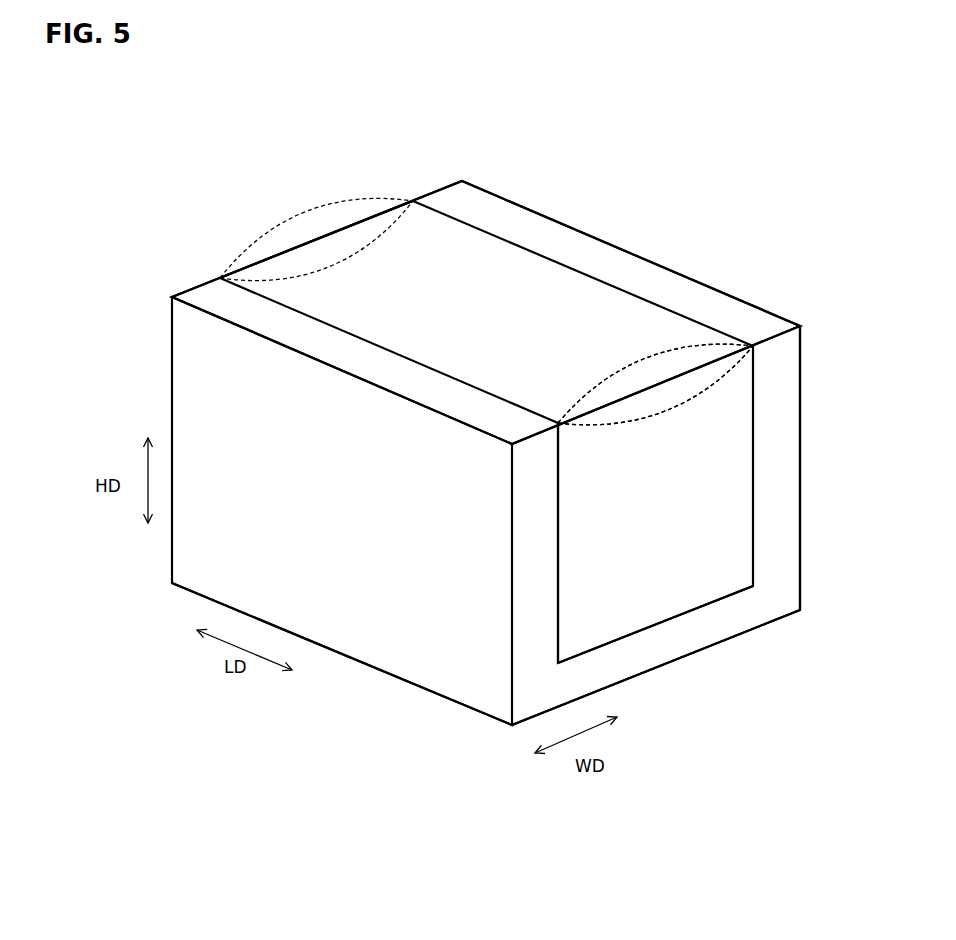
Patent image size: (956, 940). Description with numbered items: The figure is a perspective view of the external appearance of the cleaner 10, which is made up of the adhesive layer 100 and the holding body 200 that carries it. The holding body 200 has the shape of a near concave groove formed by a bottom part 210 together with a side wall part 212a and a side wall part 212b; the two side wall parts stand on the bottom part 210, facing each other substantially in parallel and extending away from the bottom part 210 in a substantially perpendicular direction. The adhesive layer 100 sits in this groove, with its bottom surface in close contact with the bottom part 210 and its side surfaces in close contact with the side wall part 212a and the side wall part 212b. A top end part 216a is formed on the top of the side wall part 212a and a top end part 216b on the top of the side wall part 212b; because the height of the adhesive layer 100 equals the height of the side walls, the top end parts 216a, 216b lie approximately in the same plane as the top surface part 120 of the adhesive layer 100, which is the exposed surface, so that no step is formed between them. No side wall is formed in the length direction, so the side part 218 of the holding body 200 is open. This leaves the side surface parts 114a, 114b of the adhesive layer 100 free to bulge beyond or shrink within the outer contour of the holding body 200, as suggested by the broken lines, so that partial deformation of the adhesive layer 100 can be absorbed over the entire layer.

The cleaner 10 is at (517, 167).
The adhesive layer 100 is at (485, 308).
The side surface part 114a is at (607, 582).
The side surface part 114b is at (252, 220).
The top surface part 120 is at (663, 337).
The holding body 200 is at (190, 390).
The bottom part 210 is at (627, 665).
The side wall part 212a is at (358, 597).
The side wall part 212b is at (777, 500).
The top end part 216a is at (220, 293).
The top end part 216b is at (655, 280).
The side part 218 is at (670, 525).